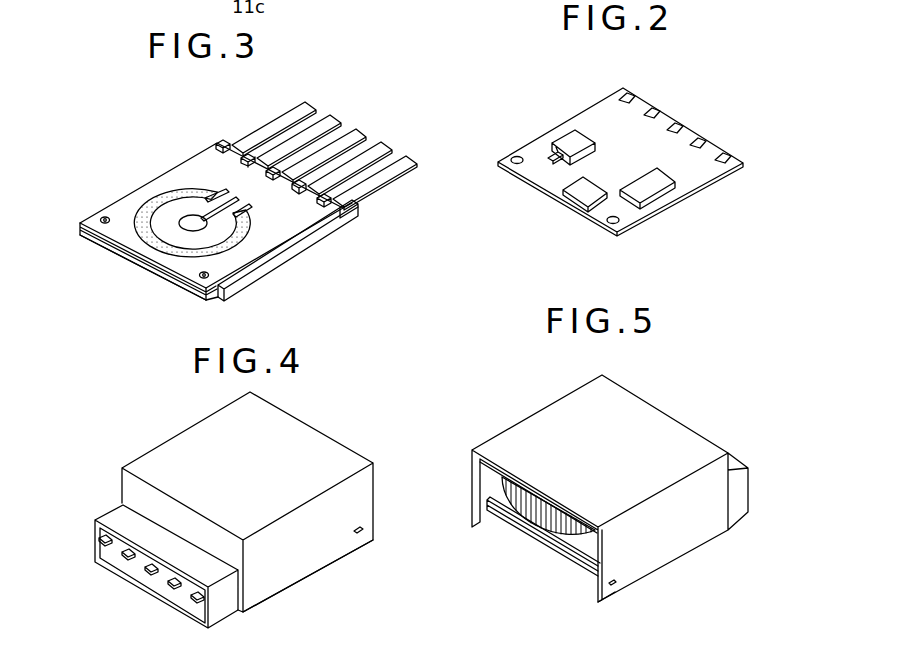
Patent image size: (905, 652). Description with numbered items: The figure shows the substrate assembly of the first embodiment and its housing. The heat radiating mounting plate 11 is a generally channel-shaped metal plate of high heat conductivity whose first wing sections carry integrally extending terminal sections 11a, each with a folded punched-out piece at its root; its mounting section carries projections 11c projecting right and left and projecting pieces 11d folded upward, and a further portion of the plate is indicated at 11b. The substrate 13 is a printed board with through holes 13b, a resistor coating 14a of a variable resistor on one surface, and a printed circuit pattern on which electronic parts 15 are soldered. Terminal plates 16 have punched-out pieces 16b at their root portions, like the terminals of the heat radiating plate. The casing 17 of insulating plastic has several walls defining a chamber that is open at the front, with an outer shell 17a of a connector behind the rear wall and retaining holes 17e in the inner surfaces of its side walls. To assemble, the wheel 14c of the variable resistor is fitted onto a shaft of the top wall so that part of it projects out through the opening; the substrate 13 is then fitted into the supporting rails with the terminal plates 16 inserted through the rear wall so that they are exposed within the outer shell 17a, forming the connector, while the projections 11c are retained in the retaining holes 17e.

In FIG. 3, the heat radiating mounting plate 11 is at (323, 238).
In FIG. 5, the heat radiating mounting plate 11 is at (558, 557).
In FIG. 3, the terminal section 11a is at (403, 162).
In FIG. 4, the terminal section 11a is at (98, 540).
In FIG. 3, the step portion of base board 11b is at (357, 205).
In FIG. 3, the projections 11c is at (195, 291).
In FIG. 4, the projections 11c is at (373, 540).
In FIG. 5, the projections 11c is at (615, 583).
In FIG. 3, the projecting pieces 11d is at (263, 275).
In FIG. 2, the substrate 13 is at (605, 121).
In FIG. 5, the substrate 13 is at (593, 547).
In FIG. 3, the through holes 13b is at (105, 217).
In FIG. 3, the resistor coating 14a is at (193, 192).
In FIG. 5, the wheel 14c is at (525, 498).
In FIG. 2, the electronic parts 15 is at (648, 189).
In FIG. 3, the terminal plates 16 is at (355, 133).
In FIG. 4, the terminal plates 16 is at (173, 587).
In FIG. 3, the punched-out pieces 16b is at (250, 155).
In FIG. 4, the casing 17 is at (190, 428).
In FIG. 5, the casing 17 is at (662, 412).
In FIG. 4, the outer shell 17a is at (220, 607).
In FIG. 4, the retaining holes 17e is at (353, 532).
In FIG. 5, the retaining holes 17e is at (617, 577).